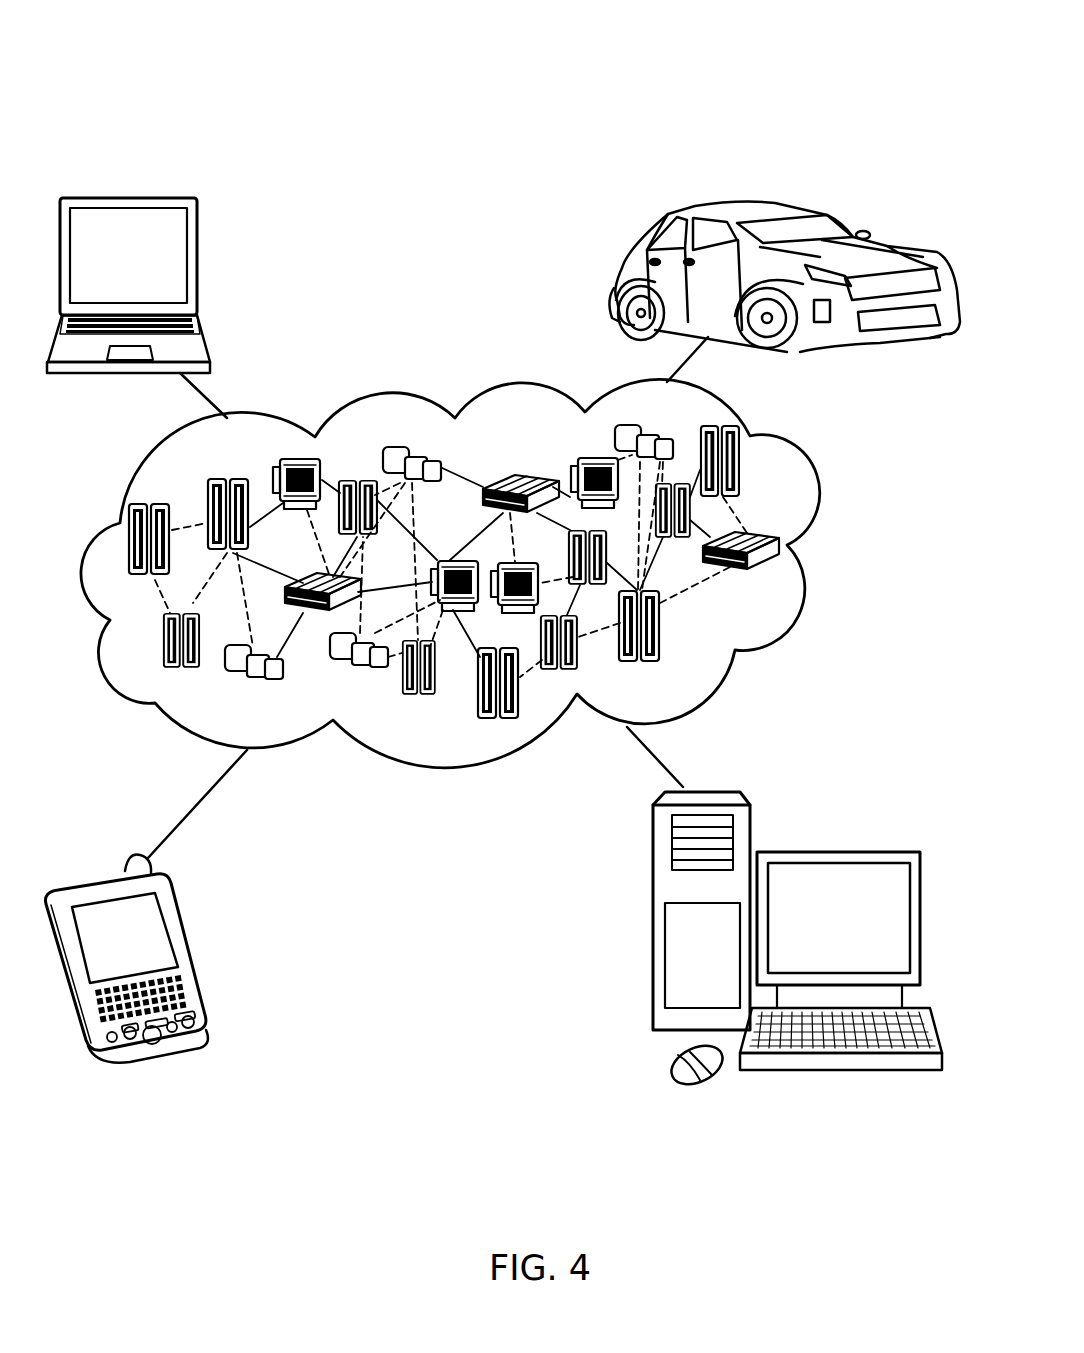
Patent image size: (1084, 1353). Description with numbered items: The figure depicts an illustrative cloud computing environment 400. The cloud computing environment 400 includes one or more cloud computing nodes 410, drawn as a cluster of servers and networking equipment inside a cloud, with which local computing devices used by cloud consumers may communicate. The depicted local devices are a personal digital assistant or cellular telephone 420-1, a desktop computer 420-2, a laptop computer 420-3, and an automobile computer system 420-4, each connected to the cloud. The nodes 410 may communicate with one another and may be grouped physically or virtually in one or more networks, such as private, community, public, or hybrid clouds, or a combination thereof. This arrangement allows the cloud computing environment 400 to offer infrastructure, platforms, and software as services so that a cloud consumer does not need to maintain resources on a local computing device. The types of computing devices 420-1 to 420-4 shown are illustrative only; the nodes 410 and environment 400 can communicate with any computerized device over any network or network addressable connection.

The cloud computing environment 400 is at (784, 54).
The cloud computing nodes 410 is at (788, 581).
The personal digital assistant or cellular telephone 420-1 is at (187, 950).
The desktop computer 420-2 is at (850, 830).
The laptop computer 420-3 is at (198, 260).
The automobile computer system 420-4 is at (621, 282).